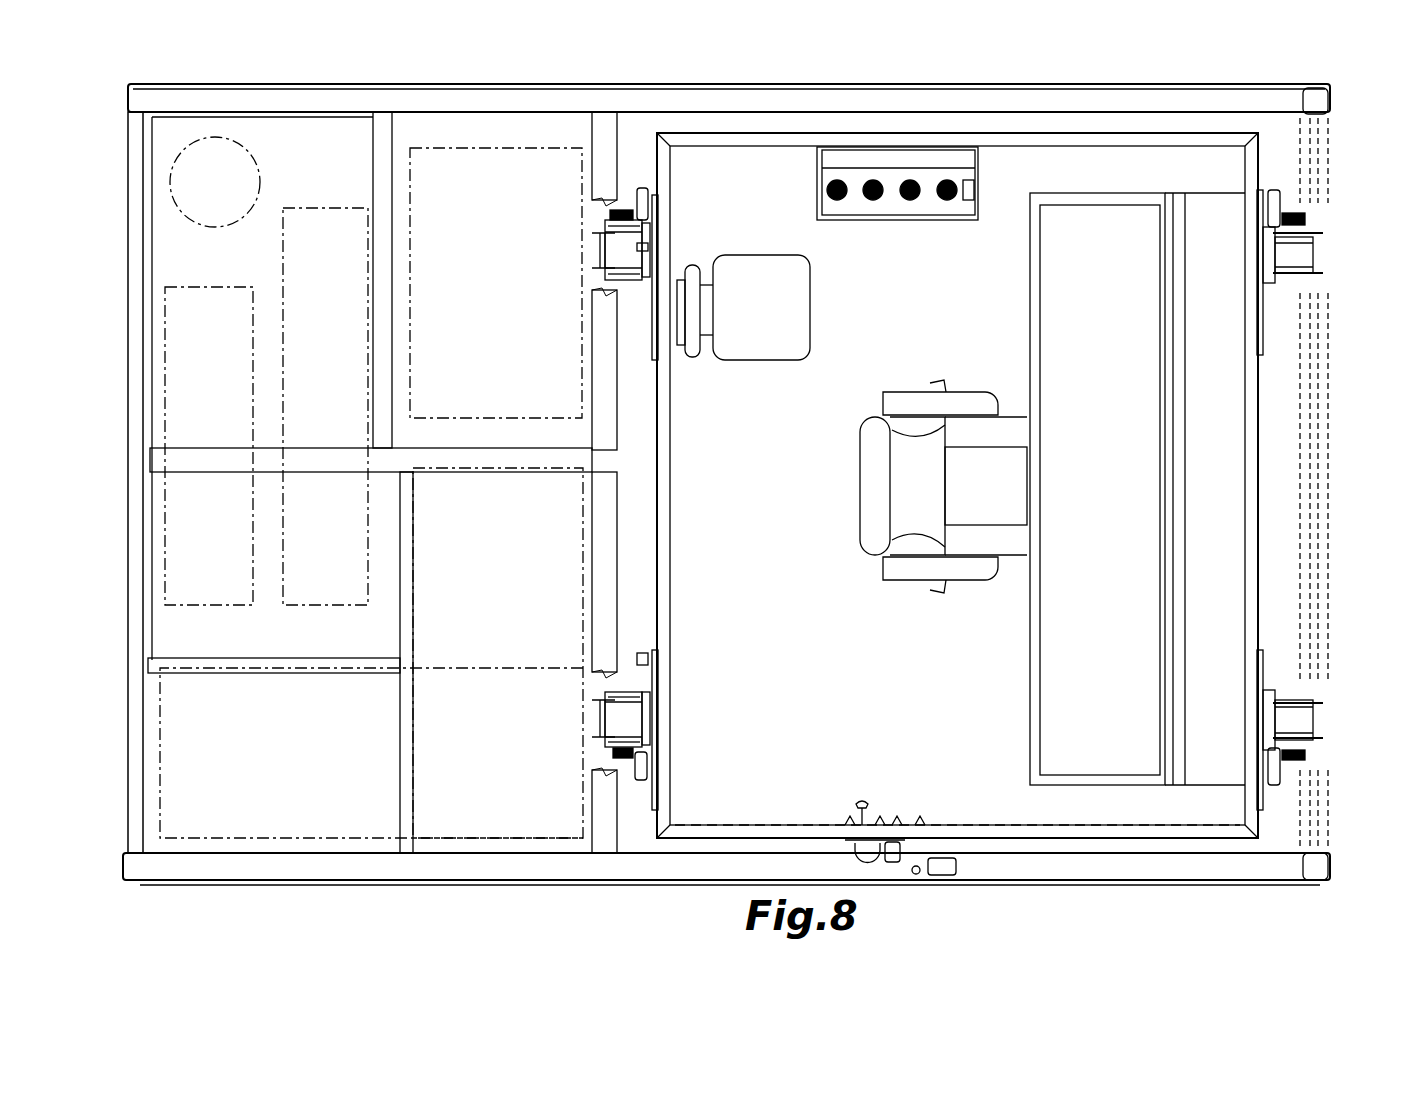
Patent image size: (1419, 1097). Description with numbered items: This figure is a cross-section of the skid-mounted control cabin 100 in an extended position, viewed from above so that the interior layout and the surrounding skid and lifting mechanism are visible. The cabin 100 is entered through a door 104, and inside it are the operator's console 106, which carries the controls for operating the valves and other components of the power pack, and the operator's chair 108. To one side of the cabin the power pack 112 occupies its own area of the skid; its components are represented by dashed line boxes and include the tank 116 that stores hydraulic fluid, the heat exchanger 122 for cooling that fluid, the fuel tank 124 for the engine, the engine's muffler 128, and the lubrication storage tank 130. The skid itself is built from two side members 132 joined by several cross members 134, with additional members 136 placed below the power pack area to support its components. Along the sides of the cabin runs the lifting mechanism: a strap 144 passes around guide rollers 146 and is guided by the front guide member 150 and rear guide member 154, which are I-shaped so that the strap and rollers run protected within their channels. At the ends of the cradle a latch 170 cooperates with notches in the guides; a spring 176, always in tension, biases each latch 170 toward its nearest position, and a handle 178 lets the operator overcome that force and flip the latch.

The control cabin 100 is at (1180, 840).
The door 104 is at (808, 825).
The operator's console 106 is at (1137, 489).
The chair 108 is at (960, 390).
The power pack 112 is at (190, 900).
The tank 116 is at (258, 840).
The heat exchanger 122 is at (209, 446).
The fuel tank 124 is at (496, 283).
The muffler 128 is at (325, 406).
The lubrication storage tank 130 is at (255, 172).
The side member 132 is at (1015, 92).
The cross member 134 is at (592, 125).
The additional member 136 is at (373, 128).
The strap 144 is at (622, 235).
The guide roller 146 is at (637, 282).
The front guide member 150 is at (1318, 235).
The rear guide member 154 is at (597, 228).
The latch 170 is at (648, 258).
The spring 176 is at (622, 210).
The handle 178 is at (650, 190).